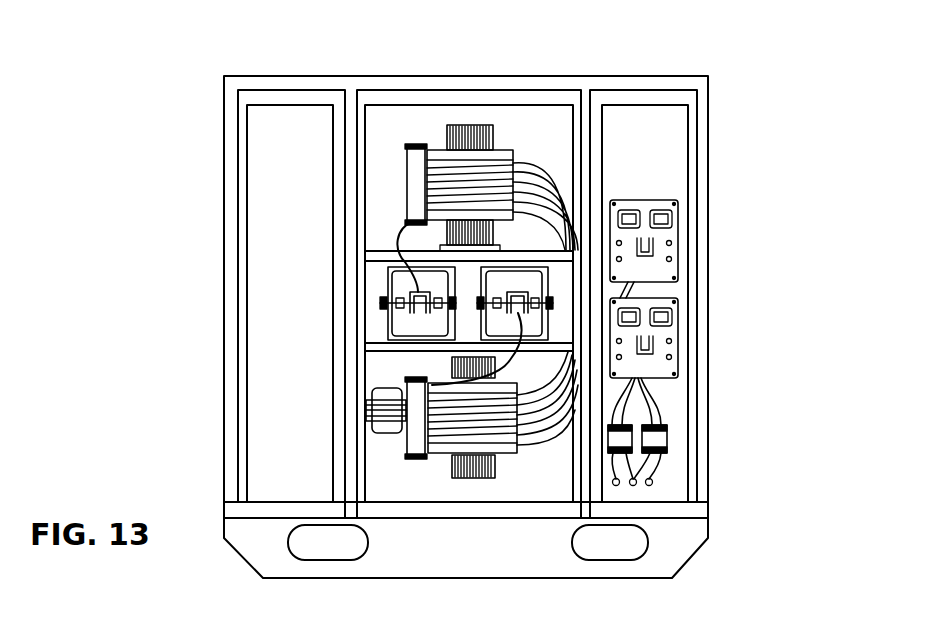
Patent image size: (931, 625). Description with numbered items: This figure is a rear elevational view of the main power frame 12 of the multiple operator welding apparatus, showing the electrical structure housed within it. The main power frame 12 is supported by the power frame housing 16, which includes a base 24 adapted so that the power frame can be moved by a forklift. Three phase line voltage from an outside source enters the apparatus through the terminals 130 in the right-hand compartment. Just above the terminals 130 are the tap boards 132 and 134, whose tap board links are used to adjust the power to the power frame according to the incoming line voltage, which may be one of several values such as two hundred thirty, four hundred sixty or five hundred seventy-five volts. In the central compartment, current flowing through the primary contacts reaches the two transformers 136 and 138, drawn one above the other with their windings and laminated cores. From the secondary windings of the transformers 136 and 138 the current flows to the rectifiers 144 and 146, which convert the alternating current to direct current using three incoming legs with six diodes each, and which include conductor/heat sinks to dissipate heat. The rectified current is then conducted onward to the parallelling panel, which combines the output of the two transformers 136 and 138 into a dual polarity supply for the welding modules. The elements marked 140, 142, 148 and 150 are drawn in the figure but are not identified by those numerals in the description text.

The main power frame 12 is at (150, 204).
The power frame housing 16 is at (367, 135).
The base 24 is at (502, 563).
The terminals 130 is at (668, 481).
The tap board 132 is at (675, 330).
The tap board 134 is at (675, 220).
The transformer 136 is at (458, 478).
The transformer 138 is at (462, 127).
The mounting shelves 140 is at (377, 258).
The auxiliary transformer 142 is at (390, 435).
The rectifier 144 is at (553, 306).
The rectifier 146 is at (397, 325).
The right relay 148 is at (552, 300).
The relay contacts (left) 150 is at (392, 287).